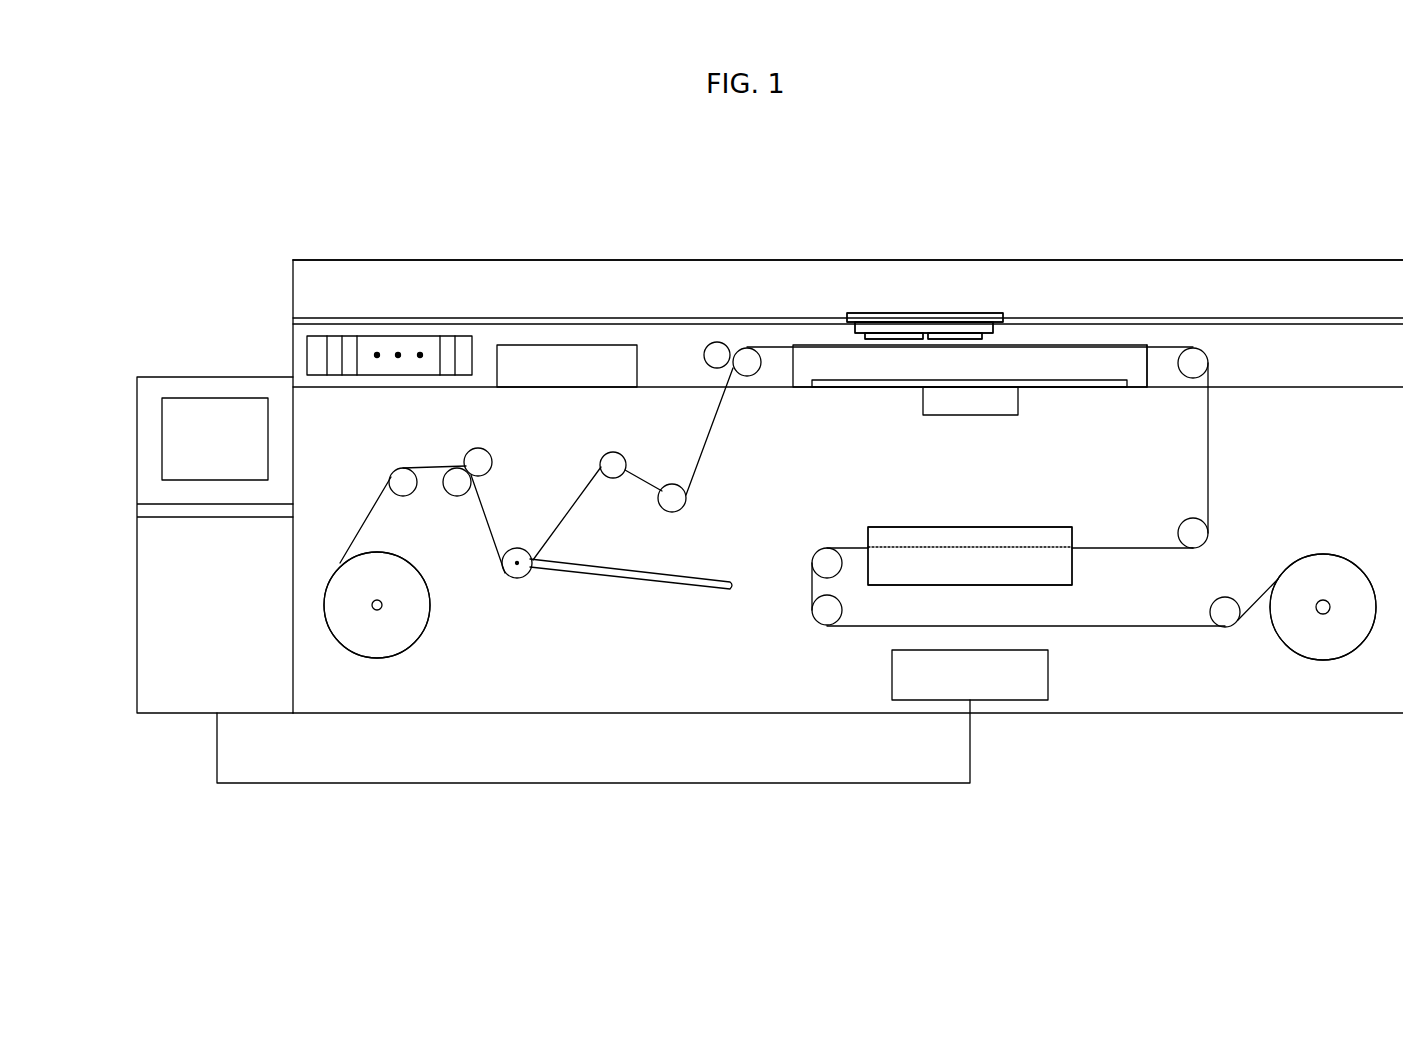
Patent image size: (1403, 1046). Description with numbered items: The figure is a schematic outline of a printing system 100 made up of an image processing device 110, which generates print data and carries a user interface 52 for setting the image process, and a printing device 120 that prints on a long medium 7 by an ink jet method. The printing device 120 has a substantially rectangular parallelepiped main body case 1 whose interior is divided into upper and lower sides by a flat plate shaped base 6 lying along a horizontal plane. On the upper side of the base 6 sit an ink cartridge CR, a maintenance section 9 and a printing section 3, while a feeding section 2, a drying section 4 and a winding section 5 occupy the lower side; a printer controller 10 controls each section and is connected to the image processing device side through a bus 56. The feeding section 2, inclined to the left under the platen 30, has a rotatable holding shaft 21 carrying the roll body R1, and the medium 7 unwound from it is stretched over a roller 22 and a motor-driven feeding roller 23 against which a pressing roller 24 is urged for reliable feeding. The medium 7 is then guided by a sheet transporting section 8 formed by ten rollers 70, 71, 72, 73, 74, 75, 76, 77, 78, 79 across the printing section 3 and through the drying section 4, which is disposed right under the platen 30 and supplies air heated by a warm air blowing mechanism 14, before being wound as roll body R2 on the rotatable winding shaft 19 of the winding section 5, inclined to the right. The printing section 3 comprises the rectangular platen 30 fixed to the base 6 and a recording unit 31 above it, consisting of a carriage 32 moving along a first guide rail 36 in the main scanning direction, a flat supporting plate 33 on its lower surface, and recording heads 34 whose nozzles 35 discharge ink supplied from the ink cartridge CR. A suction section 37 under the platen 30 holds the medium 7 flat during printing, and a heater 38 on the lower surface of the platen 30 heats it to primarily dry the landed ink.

The printing system 100 is at (1322, 176).
The printing device 120 is at (540, 248).
The image processing device 110 is at (213, 355).
The user interface 52 is at (162, 433).
The main body case 1 is at (1229, 260).
The feeding section 2 is at (460, 576).
The printing section 3 is at (1122, 300).
The drying section 4 is at (952, 517).
The warm air blowing mechanism 14 is at (970, 556).
The winding section 5 is at (1290, 530).
The base 6 is at (1283, 390).
The medium 7 is at (360, 521).
The sheet transporting section 8 is at (1274, 360).
The maintenance section 9 is at (568, 343).
The printer controller 10 is at (1048, 672).
The winding shaft 19 is at (1325, 605).
The holding shaft 21 is at (376, 600).
The roller 22 is at (397, 477).
The feeding roller 23 is at (458, 488).
The pressing roller 24 is at (483, 462).
The platen 30 is at (1149, 368).
The recording unit 31 is at (950, 298).
The carriage 32 is at (925, 317).
The supporting plate 33 is at (995, 328).
The recording head 34 is at (870, 340).
The nozzle 35 is at (923, 336).
The first guide rail 36 is at (1188, 323).
The suction section 37 is at (922, 395).
The heater 38 is at (1052, 385).
The bus 56 is at (585, 786).
The roller 70 is at (522, 572).
The roller 71 is at (615, 465).
The roller 72 is at (678, 503).
The roller 73 is at (752, 372).
The roller 74 is at (1199, 363).
The roller 75 is at (1190, 530).
The roller 76 is at (820, 560).
The roller 77 is at (818, 612).
The roller 78 is at (1218, 608).
The roller 79 is at (703, 353).
The ink cartridge CR is at (398, 366).
The roll body R1 is at (345, 632).
The roll body R2 is at (1333, 648).